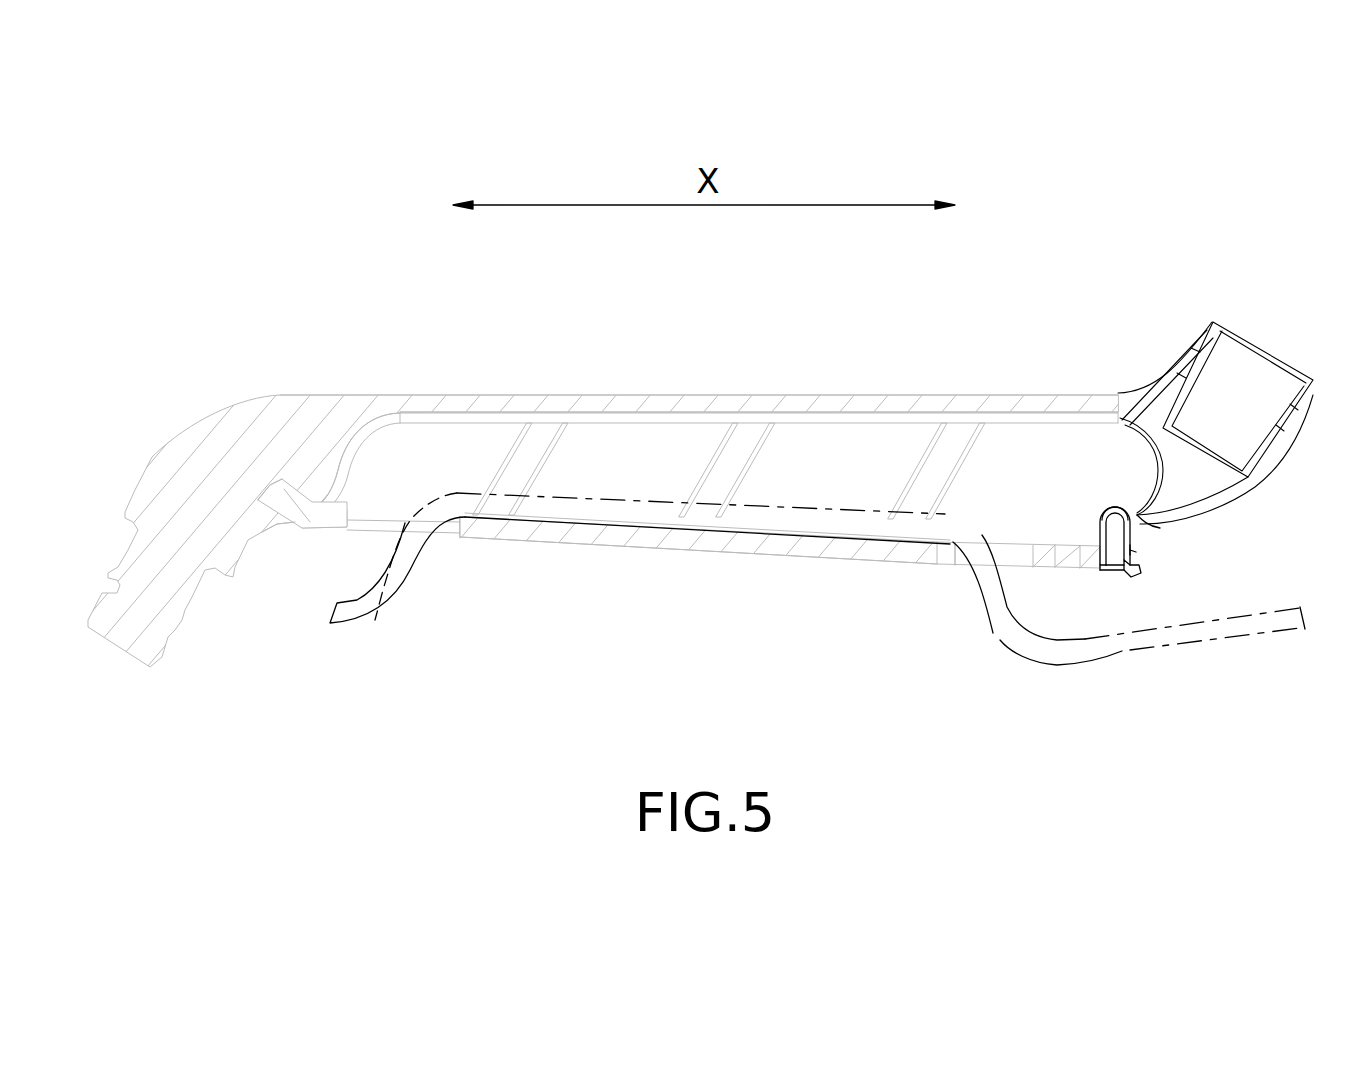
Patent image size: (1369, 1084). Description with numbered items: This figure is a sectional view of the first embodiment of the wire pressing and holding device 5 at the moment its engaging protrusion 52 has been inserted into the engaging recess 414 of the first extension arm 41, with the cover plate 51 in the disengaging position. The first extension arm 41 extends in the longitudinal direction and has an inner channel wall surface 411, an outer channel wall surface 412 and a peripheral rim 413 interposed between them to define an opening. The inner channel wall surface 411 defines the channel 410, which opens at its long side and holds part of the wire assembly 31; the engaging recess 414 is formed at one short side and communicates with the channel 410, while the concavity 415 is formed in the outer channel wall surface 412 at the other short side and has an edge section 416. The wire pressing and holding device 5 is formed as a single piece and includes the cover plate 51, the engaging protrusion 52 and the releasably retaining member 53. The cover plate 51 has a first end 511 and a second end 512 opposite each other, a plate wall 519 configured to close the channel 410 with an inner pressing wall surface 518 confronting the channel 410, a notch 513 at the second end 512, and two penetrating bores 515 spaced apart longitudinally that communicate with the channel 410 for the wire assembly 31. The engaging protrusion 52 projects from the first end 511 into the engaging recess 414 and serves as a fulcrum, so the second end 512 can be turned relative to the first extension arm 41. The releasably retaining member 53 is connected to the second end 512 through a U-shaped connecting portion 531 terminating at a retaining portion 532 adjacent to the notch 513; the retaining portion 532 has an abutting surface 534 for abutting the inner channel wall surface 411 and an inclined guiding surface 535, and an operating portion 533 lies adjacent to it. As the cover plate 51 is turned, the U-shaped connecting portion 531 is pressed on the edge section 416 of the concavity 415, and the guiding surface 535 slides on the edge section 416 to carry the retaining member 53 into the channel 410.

The wire pressing and holding device 5 is at (600, 572).
The wire assembly 31 is at (647, 513).
The first extension arm 41 is at (497, 393).
The outer channel wall surface 412 is at (699, 403).
The channel 410 is at (600, 457).
The inner channel wall surface 411 is at (692, 413).
The peripheral rim 413 is at (367, 537).
The engaging recess 414 is at (277, 483).
The concavity 415 is at (1148, 516).
The edge section 416 is at (1127, 530).
The cover plate 51 is at (533, 537).
The first end 511 is at (295, 535).
The second end 512 is at (1130, 572).
The notch 513 is at (1117, 573).
The penetrating bores 515 is at (407, 527).
The inner pressing wall surface 518 is at (832, 535).
The plate wall 519 is at (747, 553).
The engaging protrusion 52 is at (288, 505).
The releasably retaining member 53 is at (1108, 507).
The U-shaped connecting portion 531 is at (1122, 507).
The retaining portion 532 is at (1141, 562).
The operating portion 533 is at (1130, 578).
The abutting surface 534 is at (1143, 573).
The guiding surface 535 is at (1140, 551).